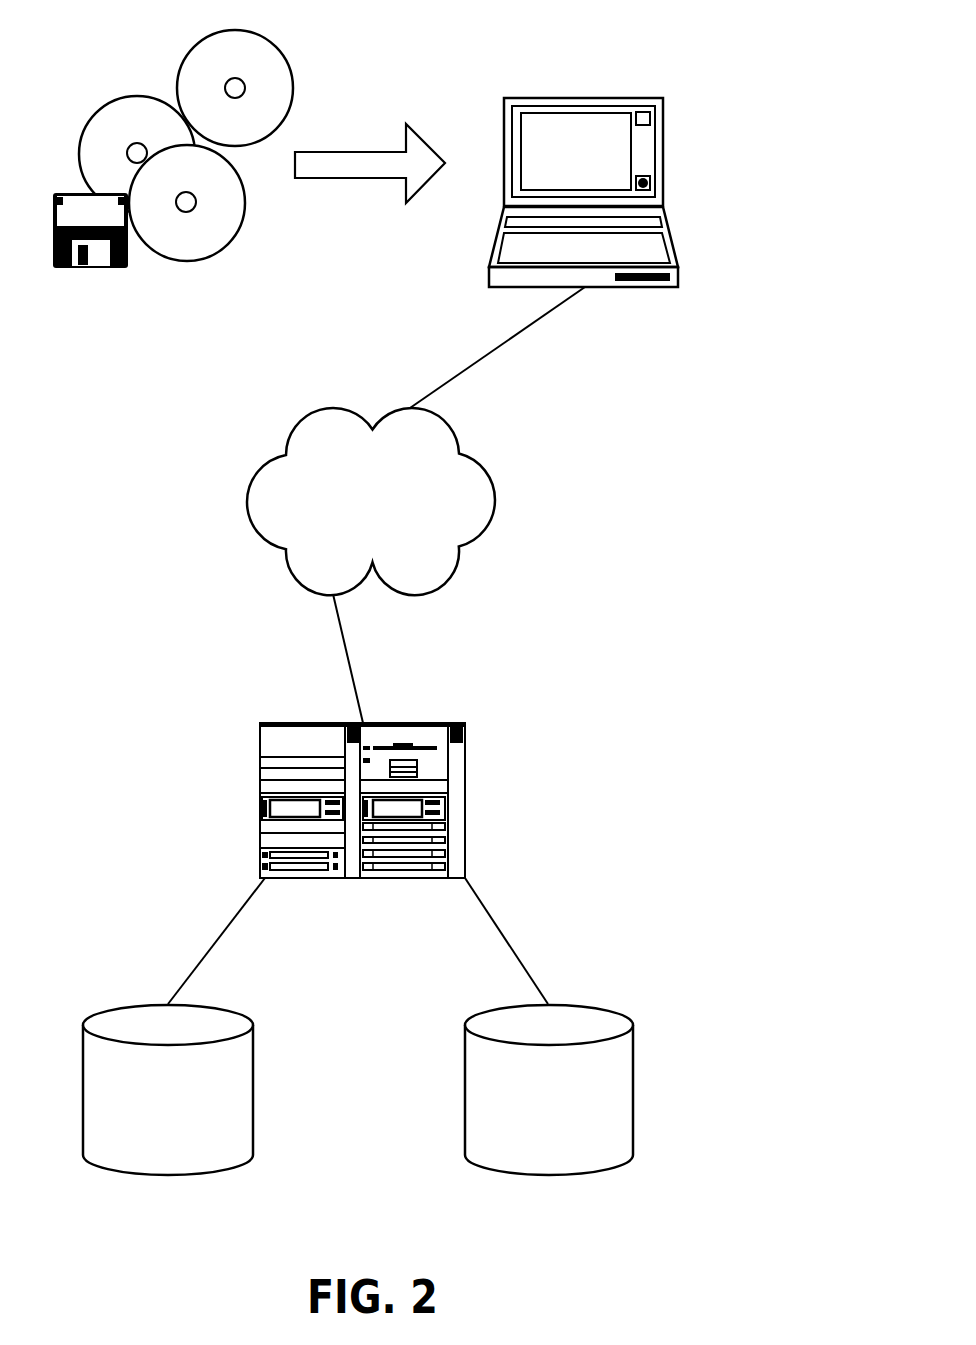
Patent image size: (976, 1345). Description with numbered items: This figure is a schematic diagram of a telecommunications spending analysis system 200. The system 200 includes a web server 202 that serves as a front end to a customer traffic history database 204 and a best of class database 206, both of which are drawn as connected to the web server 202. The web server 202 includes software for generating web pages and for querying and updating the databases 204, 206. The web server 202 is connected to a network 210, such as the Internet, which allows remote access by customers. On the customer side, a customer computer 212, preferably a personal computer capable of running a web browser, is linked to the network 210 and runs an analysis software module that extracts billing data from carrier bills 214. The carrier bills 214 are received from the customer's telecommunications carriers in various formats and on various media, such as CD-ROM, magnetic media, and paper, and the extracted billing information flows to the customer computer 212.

The telecommunications spending analysis system 200 is at (795, 148).
The web server 202 is at (425, 723).
The customer traffic history database 204 is at (240, 1015).
The best of class database 206 is at (583, 1005).
The network 210 is at (493, 472).
The customer computer 212 is at (663, 126).
The carrier bills 214 is at (103, 44).